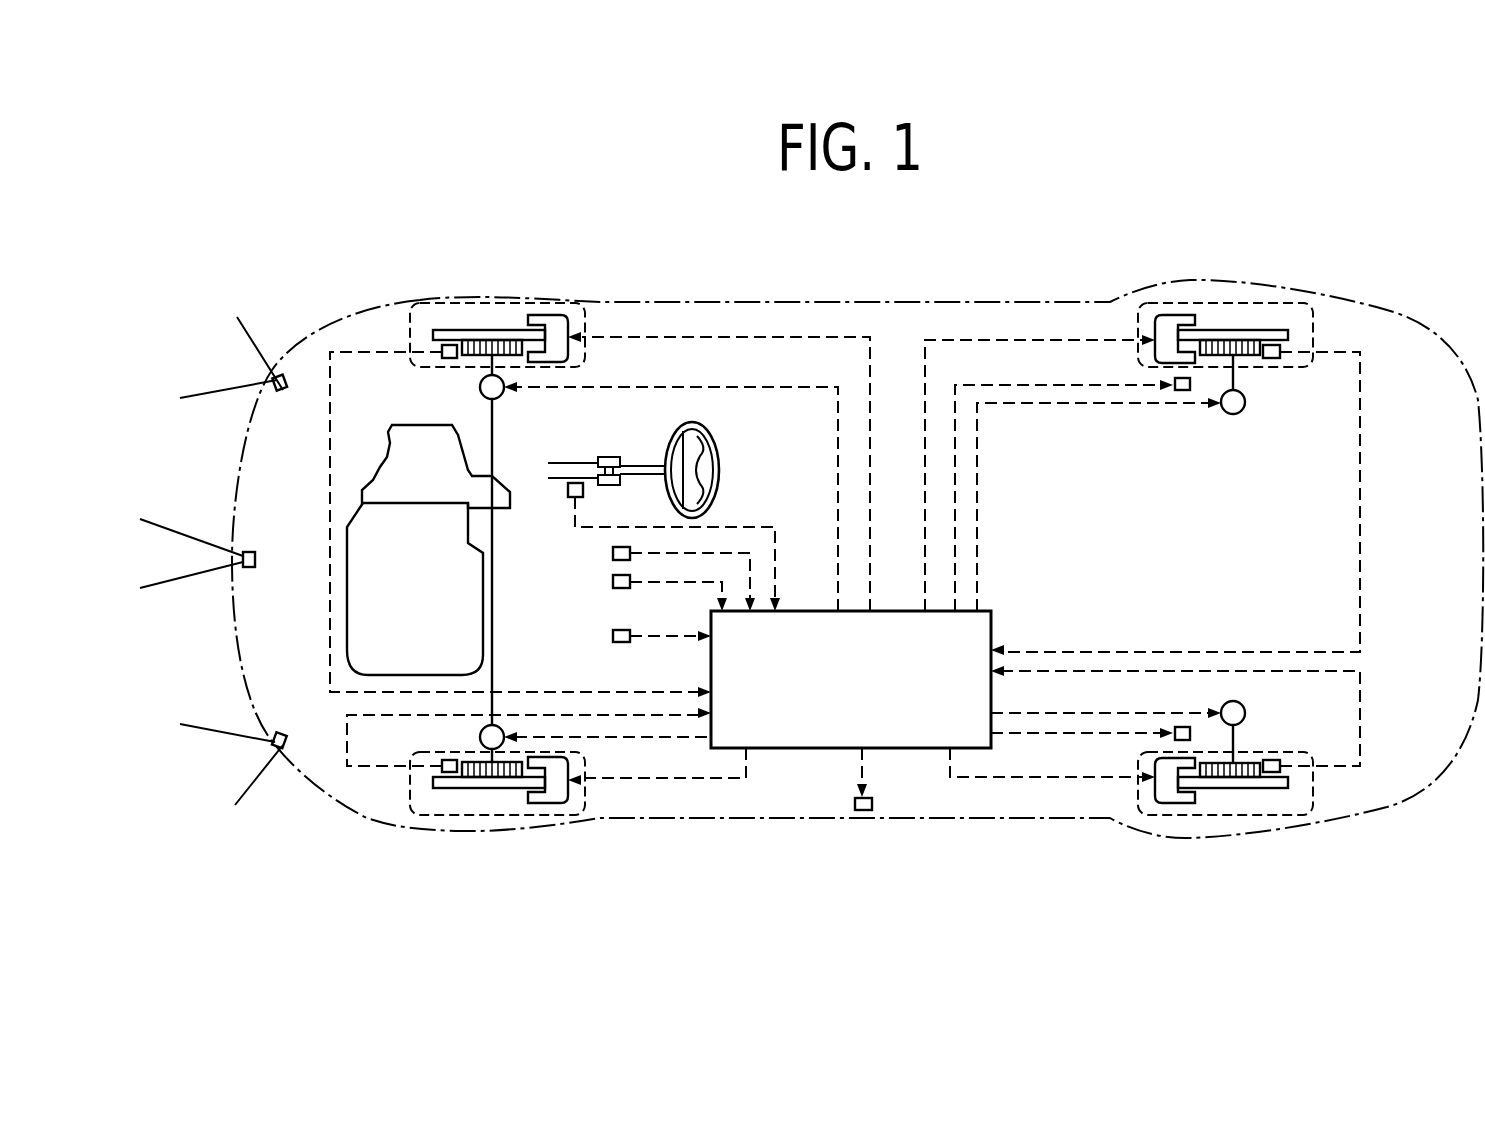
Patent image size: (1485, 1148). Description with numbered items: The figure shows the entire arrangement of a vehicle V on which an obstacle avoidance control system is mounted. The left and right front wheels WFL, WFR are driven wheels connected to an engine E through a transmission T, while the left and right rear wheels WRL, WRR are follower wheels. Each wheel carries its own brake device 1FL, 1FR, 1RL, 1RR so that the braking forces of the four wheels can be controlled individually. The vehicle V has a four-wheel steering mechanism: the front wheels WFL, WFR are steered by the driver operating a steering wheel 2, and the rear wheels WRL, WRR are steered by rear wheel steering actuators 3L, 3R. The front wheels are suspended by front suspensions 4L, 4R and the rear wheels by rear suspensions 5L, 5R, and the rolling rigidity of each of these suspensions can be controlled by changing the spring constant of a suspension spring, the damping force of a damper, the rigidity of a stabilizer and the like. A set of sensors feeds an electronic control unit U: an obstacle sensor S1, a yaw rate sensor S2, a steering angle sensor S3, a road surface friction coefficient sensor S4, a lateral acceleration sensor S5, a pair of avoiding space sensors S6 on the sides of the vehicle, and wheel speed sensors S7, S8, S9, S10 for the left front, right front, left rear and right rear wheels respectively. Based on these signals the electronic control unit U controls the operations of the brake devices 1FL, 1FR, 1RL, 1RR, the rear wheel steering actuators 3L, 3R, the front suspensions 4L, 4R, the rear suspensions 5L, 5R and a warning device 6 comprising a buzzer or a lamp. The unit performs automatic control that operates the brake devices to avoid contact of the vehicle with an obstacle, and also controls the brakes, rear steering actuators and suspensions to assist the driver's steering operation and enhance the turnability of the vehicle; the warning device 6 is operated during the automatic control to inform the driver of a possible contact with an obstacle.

The vehicle V is at (897, 818).
The right front wheel WFR is at (460, 303).
The left front wheel WFL is at (465, 817).
The right rear wheel WRR is at (1210, 303).
The left rear wheel WRL is at (1210, 815).
The brake device 1FR is at (550, 310).
The brake device 1FL is at (558, 812).
The brake device 1RR is at (1155, 310).
The brake device 1RL is at (1164, 808).
The steering wheel 2 is at (703, 472).
The rear wheel steering actuator 3R is at (1175, 382).
The rear wheel steering actuator 3L is at (1175, 740).
The front suspension 4R is at (480, 389).
The front suspension 4L is at (480, 733).
The rear suspension 5R is at (1237, 412).
The rear suspension 5L is at (1243, 716).
The warning device 6 is at (855, 803).
The obstacle sensor S1 is at (255, 558).
The yaw rate sensor S2 is at (613, 553).
The steering angle sensor S3 is at (568, 495).
The road surface friction coefficient sensor S4 is at (613, 582).
The lateral acceleration sensor S5 is at (613, 636).
The avoiding space sensor S6 is at (283, 392).
The wheel speed sensor S7 is at (442, 766).
The wheel speed sensor S8 is at (442, 352).
The wheel speed sensor S9 is at (1272, 775).
The wheel speed sensor S10 is at (1277, 360).
The transmission T is at (432, 483).
The engine E is at (420, 616).
The electronic control unit U is at (862, 693).